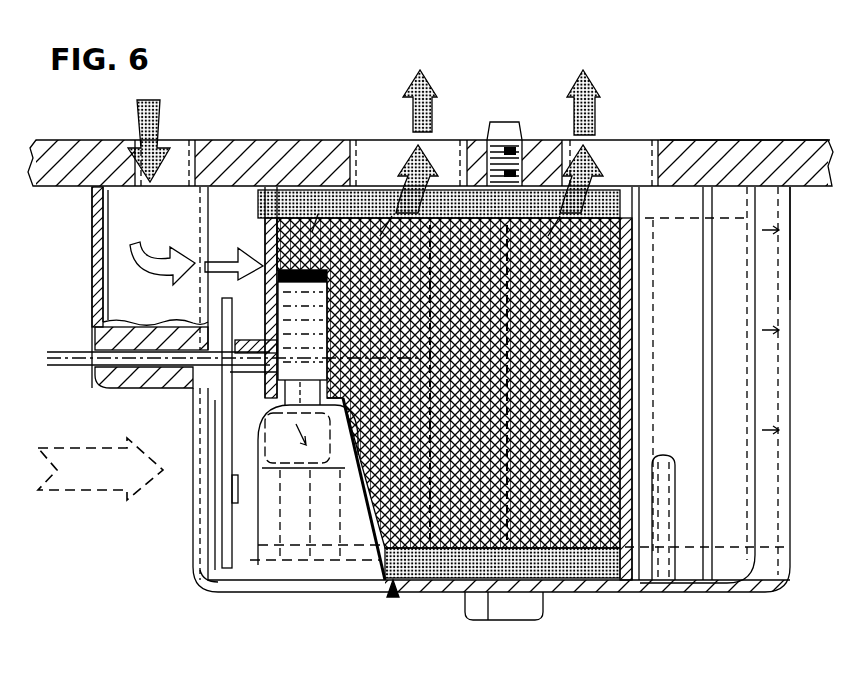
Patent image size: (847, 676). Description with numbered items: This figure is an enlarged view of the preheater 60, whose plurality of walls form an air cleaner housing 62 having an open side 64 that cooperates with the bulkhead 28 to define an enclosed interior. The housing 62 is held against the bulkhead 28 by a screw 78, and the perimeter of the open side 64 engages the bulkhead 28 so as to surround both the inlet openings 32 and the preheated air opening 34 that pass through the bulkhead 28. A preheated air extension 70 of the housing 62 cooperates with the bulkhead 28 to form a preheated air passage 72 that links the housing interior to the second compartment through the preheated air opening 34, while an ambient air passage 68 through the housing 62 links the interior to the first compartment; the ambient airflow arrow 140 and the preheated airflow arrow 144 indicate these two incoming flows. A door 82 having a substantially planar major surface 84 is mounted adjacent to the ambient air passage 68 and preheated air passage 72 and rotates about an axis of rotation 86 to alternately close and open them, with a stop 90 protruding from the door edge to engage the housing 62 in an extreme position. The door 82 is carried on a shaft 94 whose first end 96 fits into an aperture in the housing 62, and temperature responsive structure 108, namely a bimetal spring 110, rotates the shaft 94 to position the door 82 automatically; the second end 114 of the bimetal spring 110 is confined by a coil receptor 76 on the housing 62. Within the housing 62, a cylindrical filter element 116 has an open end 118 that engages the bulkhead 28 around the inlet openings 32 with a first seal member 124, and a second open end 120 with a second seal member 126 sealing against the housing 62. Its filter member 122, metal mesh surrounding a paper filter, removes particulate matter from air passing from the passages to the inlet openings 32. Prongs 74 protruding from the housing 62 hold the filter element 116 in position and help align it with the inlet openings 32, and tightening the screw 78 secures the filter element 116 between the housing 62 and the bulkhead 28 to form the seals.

The bulkhead 28 is at (90, 138).
The preheated airflow arrow 144 is at (153, 108).
The first seal member 124 is at (330, 214).
The shaft 94 is at (318, 214).
The temperature responsive structure 108 is at (262, 222).
The inlet openings 32 is at (392, 169).
The preheated air opening 34 is at (190, 183).
The preheated air passage 72 is at (155, 229).
The open end 118 is at (618, 222).
The filter element 116 is at (732, 140).
The open side 64 is at (95, 190).
The preheated air extension 70 is at (92, 290).
The axis of rotation 86 is at (80, 353).
The first end 96 is at (110, 382).
The bimetal spring 110 is at (292, 372).
The second end 114 is at (286, 398).
The ambient airflow arrow 140 is at (108, 452).
The stop 90 is at (231, 489).
The major surface 84 is at (220, 503).
The ambient air passage 68 is at (208, 528).
The door 82 is at (203, 585).
The coil receptor 76 is at (304, 487).
The filter member 122 is at (620, 398).
The prongs 74 is at (672, 460).
The housing 62 is at (828, 420).
The second seal member 126 is at (585, 568).
The second open end 120 is at (457, 592).
The screw 78 is at (535, 622).
The preheater 60 is at (393, 595).